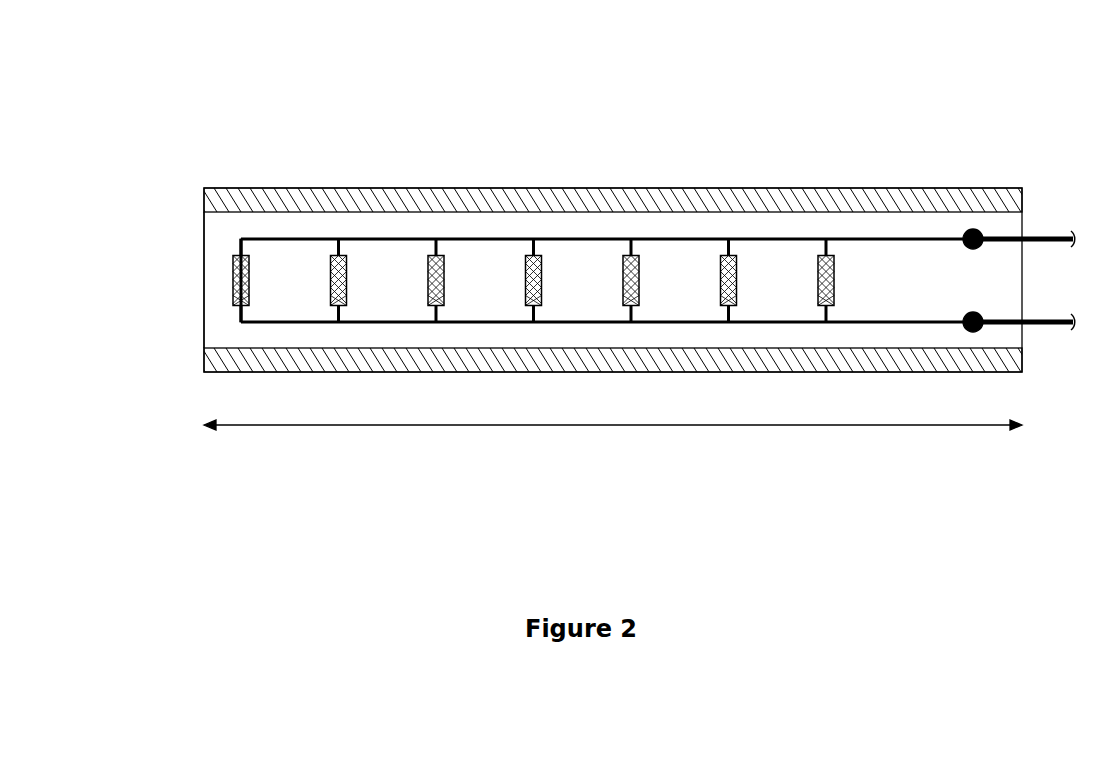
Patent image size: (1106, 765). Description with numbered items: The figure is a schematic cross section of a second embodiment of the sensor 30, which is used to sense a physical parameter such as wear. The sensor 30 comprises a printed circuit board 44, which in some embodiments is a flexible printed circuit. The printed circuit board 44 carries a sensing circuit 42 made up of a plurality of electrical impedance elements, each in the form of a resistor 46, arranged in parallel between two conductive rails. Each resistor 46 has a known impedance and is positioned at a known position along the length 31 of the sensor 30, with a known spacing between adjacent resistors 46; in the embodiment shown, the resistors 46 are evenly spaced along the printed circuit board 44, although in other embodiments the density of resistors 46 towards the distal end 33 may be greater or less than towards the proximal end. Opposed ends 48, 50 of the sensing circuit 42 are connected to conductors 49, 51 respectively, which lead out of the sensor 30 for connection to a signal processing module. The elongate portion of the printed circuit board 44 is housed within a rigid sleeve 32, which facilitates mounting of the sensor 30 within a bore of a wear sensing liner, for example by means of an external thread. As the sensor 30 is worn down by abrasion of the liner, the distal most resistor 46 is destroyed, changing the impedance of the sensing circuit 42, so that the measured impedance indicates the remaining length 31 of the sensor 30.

The sensor 30 is at (547, 140).
The length 31 is at (617, 426).
The rigid sleeve 32 is at (303, 200).
The distal end 33 is at (204, 228).
The sensing circuit 42 is at (694, 237).
The printed circuit board 44 is at (223, 326).
The resistor 46 is at (243, 282).
The first end of sensing circuit 48 is at (979, 229).
The conductor 49 is at (1046, 235).
The second end of sensing circuit 50 is at (968, 332).
The conductor 51 is at (1040, 326).